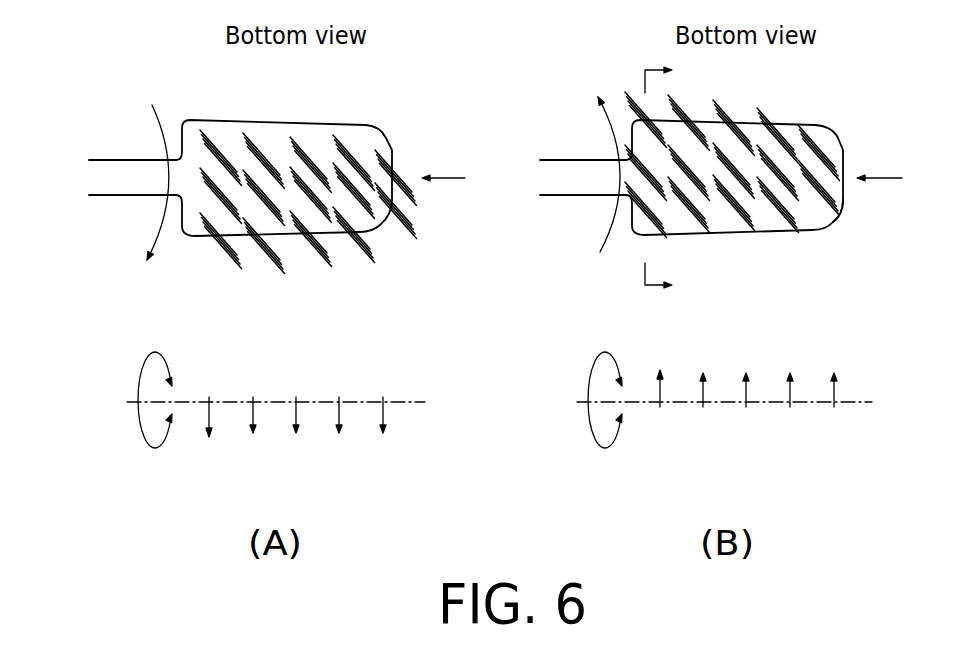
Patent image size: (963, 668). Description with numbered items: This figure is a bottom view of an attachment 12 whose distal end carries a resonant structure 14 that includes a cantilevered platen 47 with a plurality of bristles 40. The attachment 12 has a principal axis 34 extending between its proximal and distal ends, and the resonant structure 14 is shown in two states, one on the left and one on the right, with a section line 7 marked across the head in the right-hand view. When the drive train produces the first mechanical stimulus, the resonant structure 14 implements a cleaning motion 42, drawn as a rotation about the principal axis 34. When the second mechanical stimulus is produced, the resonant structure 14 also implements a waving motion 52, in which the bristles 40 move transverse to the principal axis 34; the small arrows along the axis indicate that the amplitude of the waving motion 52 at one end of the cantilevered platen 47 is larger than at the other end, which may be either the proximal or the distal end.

The section line 7- 7 is at (670, 179).
The attachment 12 is at (113, 160).
The resonant structure 14 is at (395, 117).
The principal axis 34 is at (358, 402).
The bristles 40 is at (681, 178).
The cleaning motion 42 is at (155, 448).
The cantilevered platen 47 is at (835, 221).
The waving motion 52 is at (210, 418).